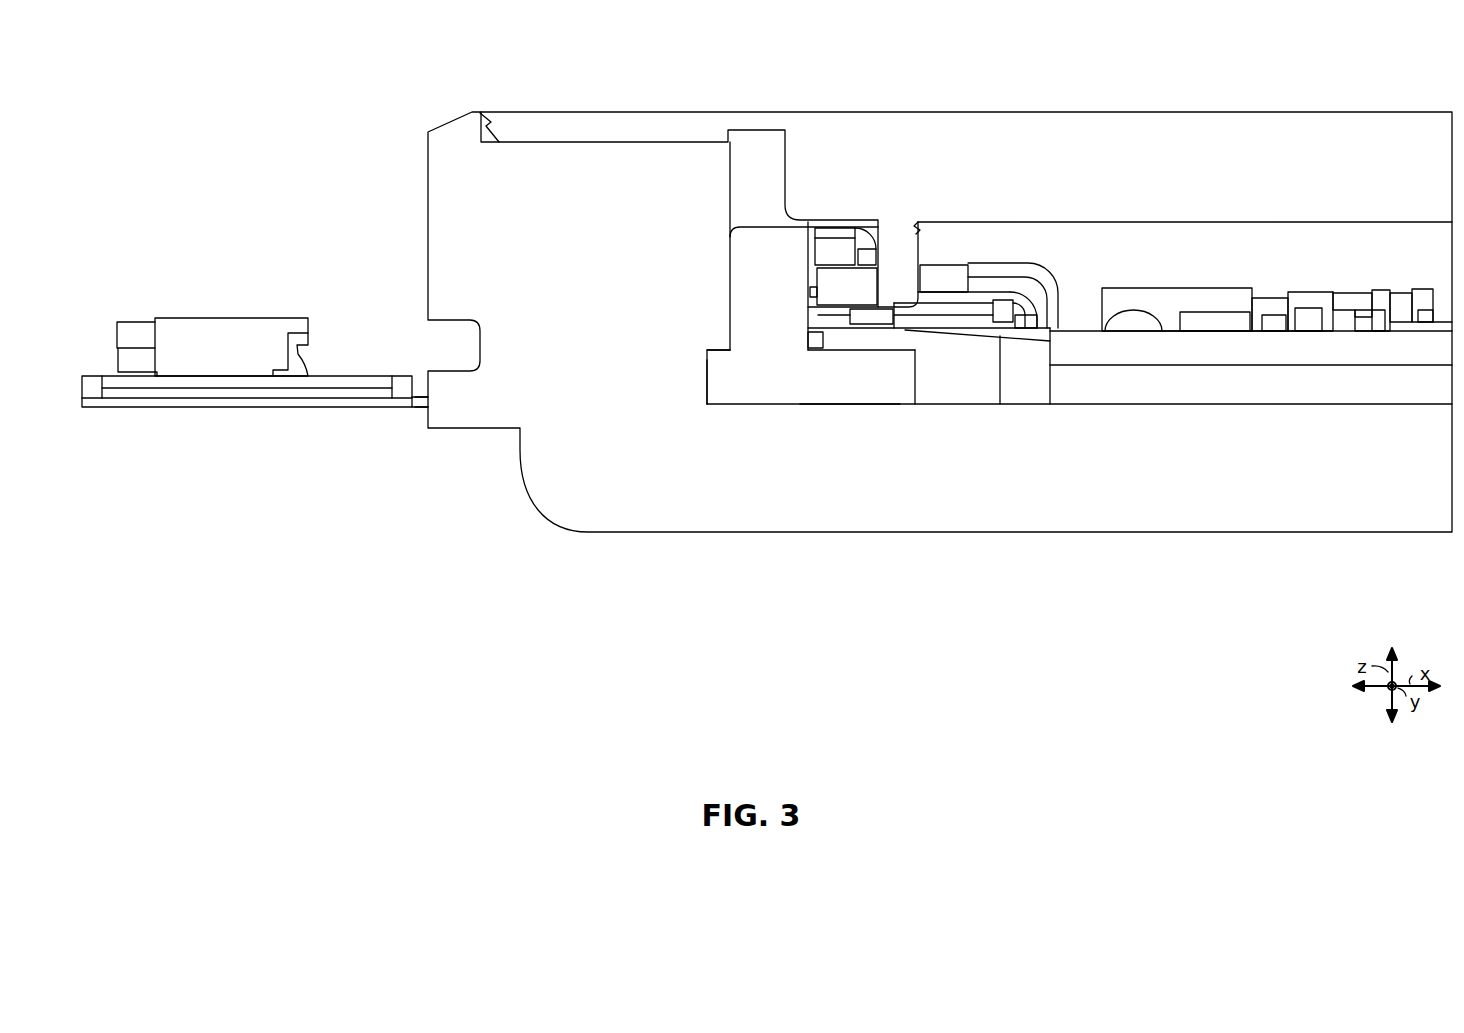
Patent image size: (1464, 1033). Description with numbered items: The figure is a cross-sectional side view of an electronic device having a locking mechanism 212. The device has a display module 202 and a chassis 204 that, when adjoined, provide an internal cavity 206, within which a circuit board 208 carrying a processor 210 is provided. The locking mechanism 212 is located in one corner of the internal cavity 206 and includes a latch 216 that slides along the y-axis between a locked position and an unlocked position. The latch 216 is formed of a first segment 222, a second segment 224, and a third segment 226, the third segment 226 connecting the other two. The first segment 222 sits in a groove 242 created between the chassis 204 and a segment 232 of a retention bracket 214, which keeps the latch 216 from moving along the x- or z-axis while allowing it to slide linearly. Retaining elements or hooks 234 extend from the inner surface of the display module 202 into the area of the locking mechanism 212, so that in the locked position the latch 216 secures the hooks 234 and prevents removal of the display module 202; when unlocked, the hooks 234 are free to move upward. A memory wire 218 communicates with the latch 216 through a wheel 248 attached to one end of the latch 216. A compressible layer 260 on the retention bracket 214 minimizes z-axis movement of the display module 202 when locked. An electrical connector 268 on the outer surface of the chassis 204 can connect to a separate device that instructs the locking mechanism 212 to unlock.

The display module 202 is at (1163, 172).
The chassis 204 is at (970, 481).
The internal cavity 206 is at (1245, 260).
The circuit board 208 is at (1209, 359).
The processor 210 is at (1157, 309).
The locking mechanism 212 is at (738, 392).
The retention bracket 214 is at (939, 377).
The latch 216 is at (743, 340).
The memory wire 218 is at (937, 310).
The first segment 222 is at (861, 389).
The second segment 224 is at (818, 263).
The third segment 226 is at (750, 312).
The segment of the retention bracket 232 is at (844, 350).
The retaining element or hook 234 is at (828, 295).
The groove 242 is at (845, 402).
The wheel 248 is at (983, 298).
The compressible layer 260 is at (873, 318).
The electrical connector 268 is at (210, 359).